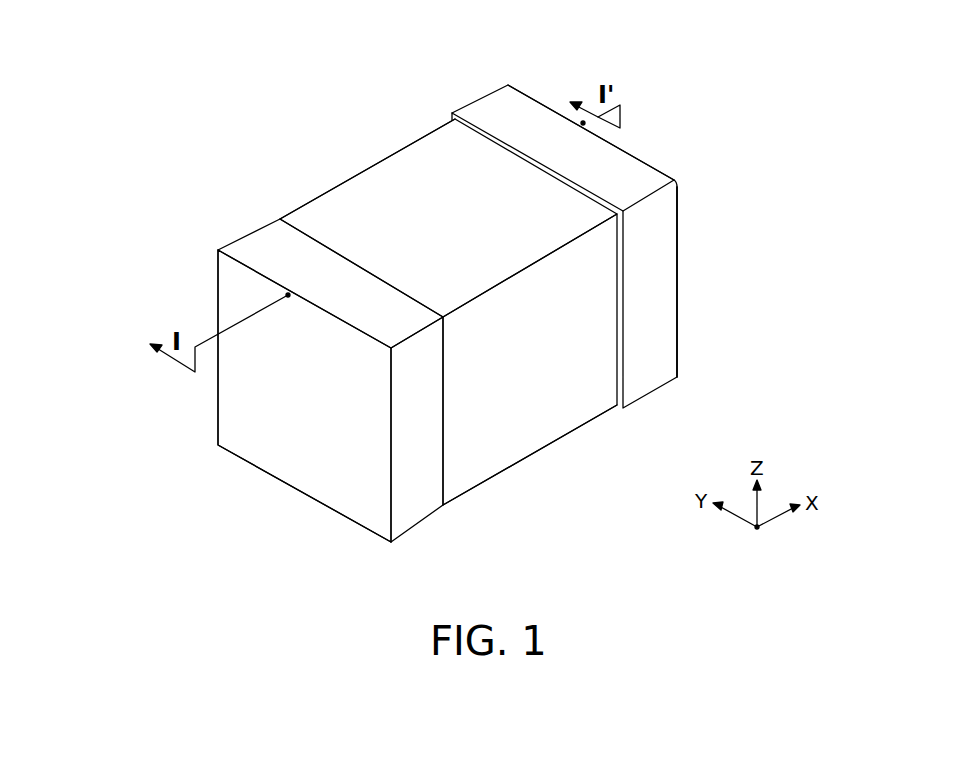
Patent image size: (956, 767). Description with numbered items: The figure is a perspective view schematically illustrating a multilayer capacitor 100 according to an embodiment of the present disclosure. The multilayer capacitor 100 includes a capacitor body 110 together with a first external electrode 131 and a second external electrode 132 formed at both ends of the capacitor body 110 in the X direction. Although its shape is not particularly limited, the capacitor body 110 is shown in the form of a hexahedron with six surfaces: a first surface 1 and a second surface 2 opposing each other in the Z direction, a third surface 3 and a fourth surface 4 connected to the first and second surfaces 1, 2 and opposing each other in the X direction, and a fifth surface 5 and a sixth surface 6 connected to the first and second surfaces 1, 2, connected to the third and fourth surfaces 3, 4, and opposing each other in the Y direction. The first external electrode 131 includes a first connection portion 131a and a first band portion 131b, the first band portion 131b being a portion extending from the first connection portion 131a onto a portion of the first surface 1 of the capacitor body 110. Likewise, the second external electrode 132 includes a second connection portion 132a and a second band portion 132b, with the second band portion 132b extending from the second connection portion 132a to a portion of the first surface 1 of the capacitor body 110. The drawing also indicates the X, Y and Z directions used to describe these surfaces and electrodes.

The multilayer capacitor 100 is at (297, 20).
The capacitor body 110 is at (486, 296).
The first surface 1 is at (525, 454).
The second surface 2 is at (445, 184).
The third surface 3 is at (273, 390).
The fourth surface 4 is at (647, 165).
The fifth surface 5 is at (576, 358).
The sixth surface 6 is at (319, 206).
The first external electrode 131 is at (303, 413).
The first connection portion 131a is at (355, 501).
The first band portion 131b is at (408, 510).
The second external electrode 132 is at (639, 238).
The second connection portion 132a is at (678, 305).
The second band portion 132b is at (655, 349).